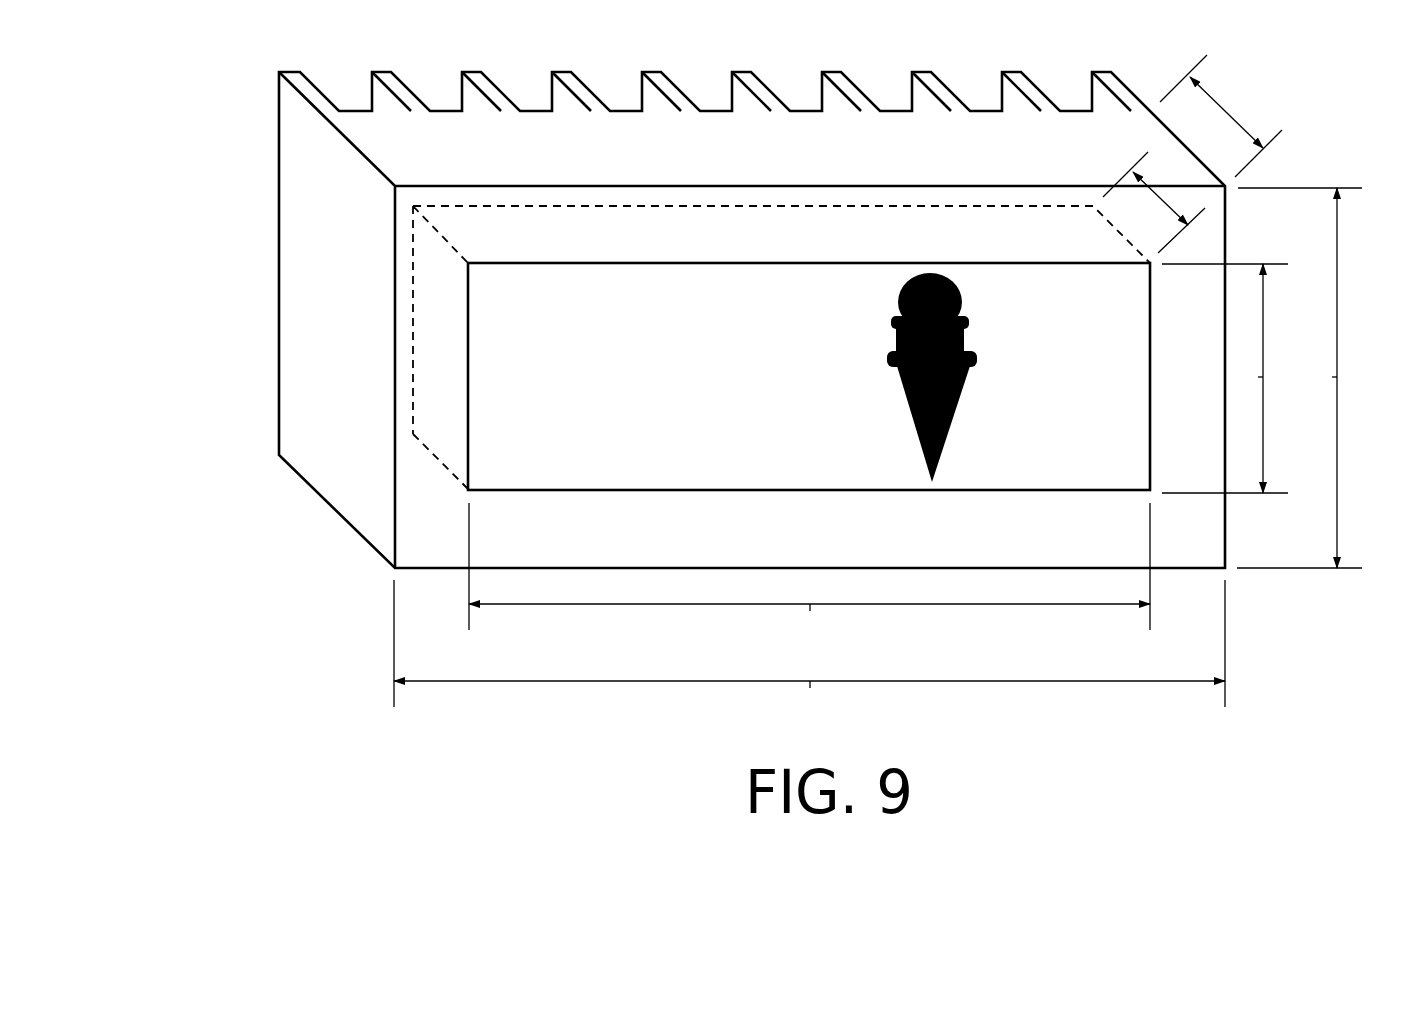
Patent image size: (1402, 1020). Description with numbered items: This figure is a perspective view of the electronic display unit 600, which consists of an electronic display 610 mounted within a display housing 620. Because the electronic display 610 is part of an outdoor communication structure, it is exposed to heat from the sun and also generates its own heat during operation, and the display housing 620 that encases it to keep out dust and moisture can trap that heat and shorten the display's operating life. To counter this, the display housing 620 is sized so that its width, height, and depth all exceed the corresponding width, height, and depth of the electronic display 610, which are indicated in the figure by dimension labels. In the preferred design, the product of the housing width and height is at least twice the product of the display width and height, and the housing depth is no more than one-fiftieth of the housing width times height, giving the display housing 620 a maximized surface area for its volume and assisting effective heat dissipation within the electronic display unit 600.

The electronic display unit 600 is at (221, 174).
The electronic display 610 is at (865, 245).
The display housing 620 is at (612, 148).